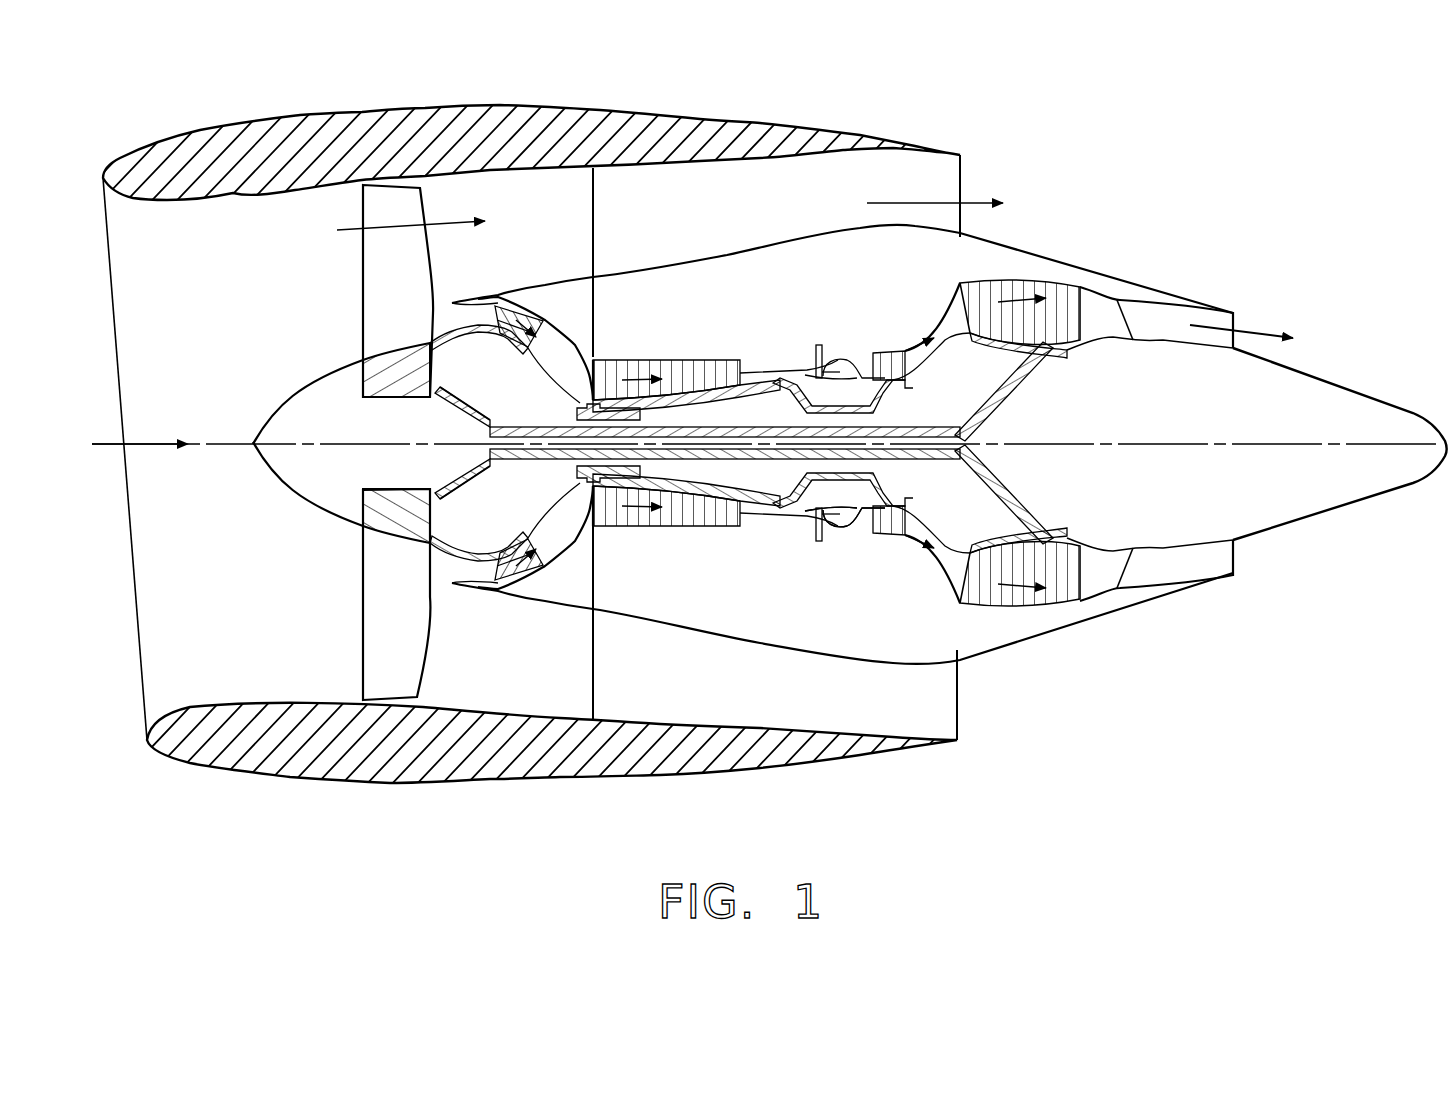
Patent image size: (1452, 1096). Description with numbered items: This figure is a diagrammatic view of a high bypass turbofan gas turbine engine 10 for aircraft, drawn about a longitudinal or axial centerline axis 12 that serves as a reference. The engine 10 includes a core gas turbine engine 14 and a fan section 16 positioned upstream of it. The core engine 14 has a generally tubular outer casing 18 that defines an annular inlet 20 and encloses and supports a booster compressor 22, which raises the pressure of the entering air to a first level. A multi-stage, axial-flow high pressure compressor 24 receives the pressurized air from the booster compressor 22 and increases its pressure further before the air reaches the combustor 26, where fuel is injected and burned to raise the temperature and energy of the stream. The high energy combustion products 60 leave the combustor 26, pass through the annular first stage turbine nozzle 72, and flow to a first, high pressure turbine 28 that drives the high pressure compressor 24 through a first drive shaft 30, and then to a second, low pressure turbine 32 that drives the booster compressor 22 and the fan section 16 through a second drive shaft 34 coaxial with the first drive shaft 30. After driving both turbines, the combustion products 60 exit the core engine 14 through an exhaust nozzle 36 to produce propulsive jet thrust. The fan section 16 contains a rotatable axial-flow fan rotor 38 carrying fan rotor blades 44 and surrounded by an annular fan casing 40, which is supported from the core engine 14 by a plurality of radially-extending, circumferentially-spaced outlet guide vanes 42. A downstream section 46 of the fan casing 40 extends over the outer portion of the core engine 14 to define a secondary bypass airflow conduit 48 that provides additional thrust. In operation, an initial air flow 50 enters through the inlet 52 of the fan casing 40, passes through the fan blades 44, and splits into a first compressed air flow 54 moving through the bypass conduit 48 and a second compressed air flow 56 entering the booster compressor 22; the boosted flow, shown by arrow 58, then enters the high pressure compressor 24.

The gas turbine engine 10 is at (1138, 142).
The longitudinal centerline axis 12 is at (1165, 444).
The core gas turbine engine 14 is at (792, 312).
The fan section 16 is at (420, 90).
The outer casing 18 is at (787, 647).
The annular inlet 20 is at (478, 574).
The booster compressor 22 is at (543, 523).
The high pressure compressor 24 is at (630, 513).
The combustor 26 is at (837, 523).
The first turbine 28 is at (903, 527).
The first drive shaft 30 is at (873, 402).
The second turbine 32 is at (1060, 603).
The second drive shaft 34 is at (555, 425).
The exhaust nozzle 36 is at (1237, 320).
The fan rotor 38 is at (430, 392).
The fan casing 40 is at (410, 778).
The outlet guide vanes 42 is at (593, 220).
The fan rotor blades 44 is at (357, 630).
The downstream section 46 is at (843, 132).
The bypass airflow conduit 48 is at (756, 215).
The initial air flow 50 is at (133, 440).
The inlet 52 is at (140, 713).
The first compressed air flow 54 is at (380, 223).
The second compressed air flow 56 is at (457, 297).
The arrow 58 is at (617, 357).
The combustion products 60 is at (893, 345).
The first stage turbine nozzle 72 is at (857, 523).